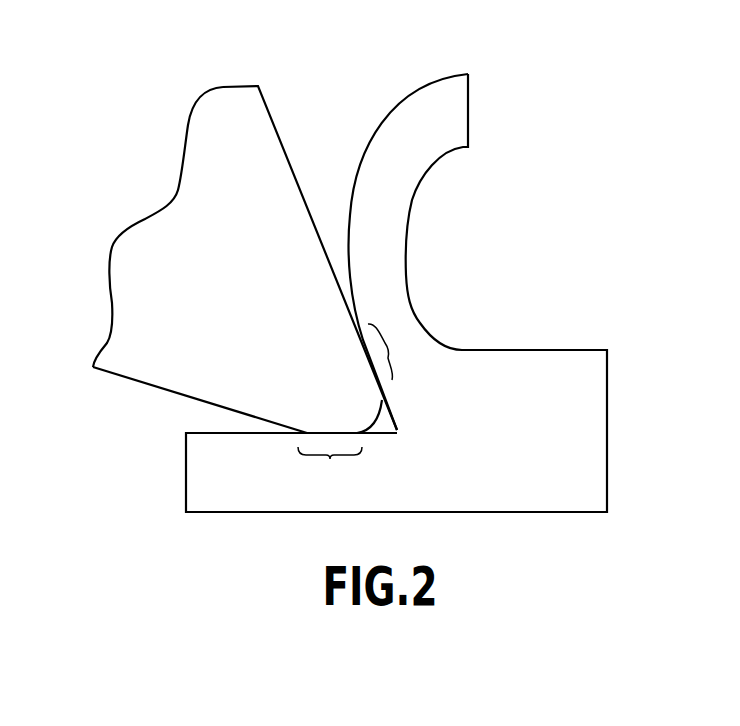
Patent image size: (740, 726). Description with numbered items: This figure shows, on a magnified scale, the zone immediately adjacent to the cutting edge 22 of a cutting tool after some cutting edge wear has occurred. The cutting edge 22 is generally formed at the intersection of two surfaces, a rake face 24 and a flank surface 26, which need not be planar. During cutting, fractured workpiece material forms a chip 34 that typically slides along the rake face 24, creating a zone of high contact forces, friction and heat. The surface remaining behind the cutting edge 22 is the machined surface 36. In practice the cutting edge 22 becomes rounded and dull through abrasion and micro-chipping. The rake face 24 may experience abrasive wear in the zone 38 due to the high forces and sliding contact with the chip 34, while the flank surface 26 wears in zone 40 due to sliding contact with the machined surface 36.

The cutting edge 22 is at (396, 429).
The rake face 24 is at (277, 127).
The flank surface 26 is at (195, 397).
The chip 34 is at (407, 227).
The machined surface 36 is at (200, 433).
The zone 38 is at (390, 350).
The zone 40 is at (330, 458).